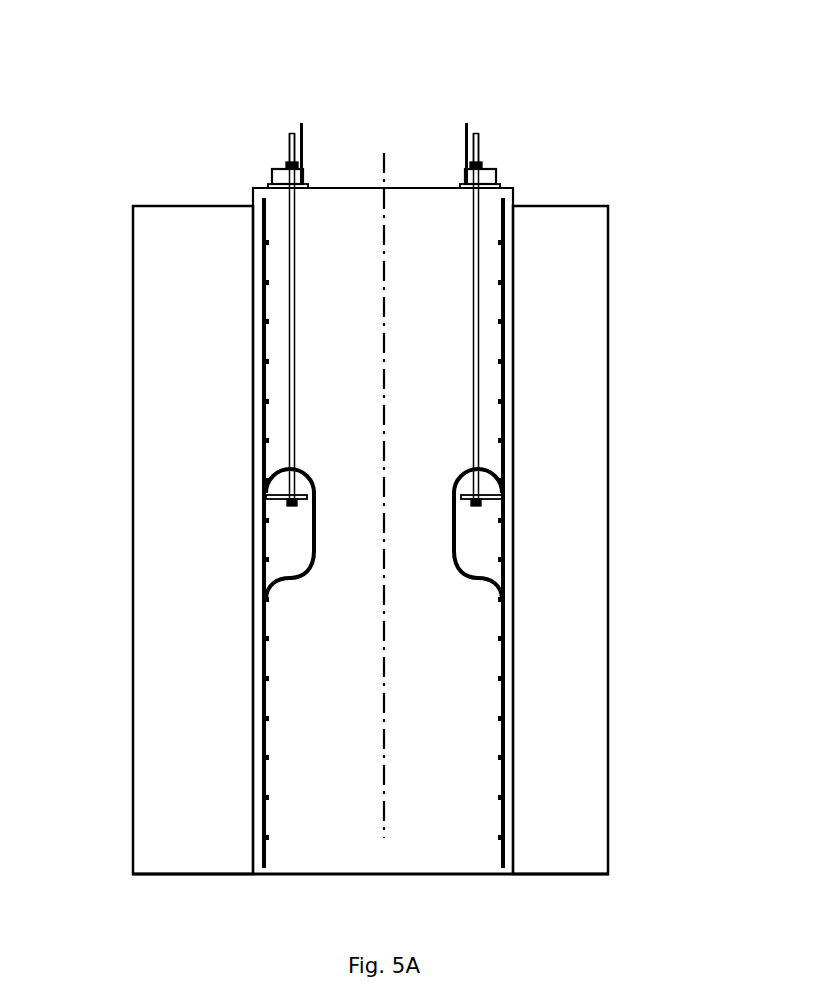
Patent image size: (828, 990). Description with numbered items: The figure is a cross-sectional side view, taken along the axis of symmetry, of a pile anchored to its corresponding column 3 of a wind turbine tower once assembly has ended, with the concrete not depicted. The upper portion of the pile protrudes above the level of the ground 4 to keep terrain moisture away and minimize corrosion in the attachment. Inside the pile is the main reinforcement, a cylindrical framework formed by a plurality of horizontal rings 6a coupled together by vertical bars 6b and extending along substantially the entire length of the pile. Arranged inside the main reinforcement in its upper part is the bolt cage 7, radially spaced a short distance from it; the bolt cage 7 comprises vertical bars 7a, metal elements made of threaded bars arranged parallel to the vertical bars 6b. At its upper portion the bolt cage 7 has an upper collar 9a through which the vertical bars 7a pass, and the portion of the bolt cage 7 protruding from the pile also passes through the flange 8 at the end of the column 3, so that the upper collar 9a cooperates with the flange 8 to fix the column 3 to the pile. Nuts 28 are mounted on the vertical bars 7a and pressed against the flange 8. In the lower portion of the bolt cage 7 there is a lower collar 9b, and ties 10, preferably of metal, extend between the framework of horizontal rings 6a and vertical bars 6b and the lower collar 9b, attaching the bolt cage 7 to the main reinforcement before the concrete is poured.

The column 3 is at (468, 122).
The nuts 28 is at (477, 168).
The flange 8 is at (498, 172).
The ground 4 is at (590, 205).
The bolt cage 7 is at (287, 143).
The upper collar 9a is at (267, 183).
The vertical bars 6b is at (255, 217).
The horizontal rings 6a is at (263, 240).
The vertical bars 7a is at (294, 367).
The lower collar 9b is at (505, 488).
The ties 10 is at (460, 562).